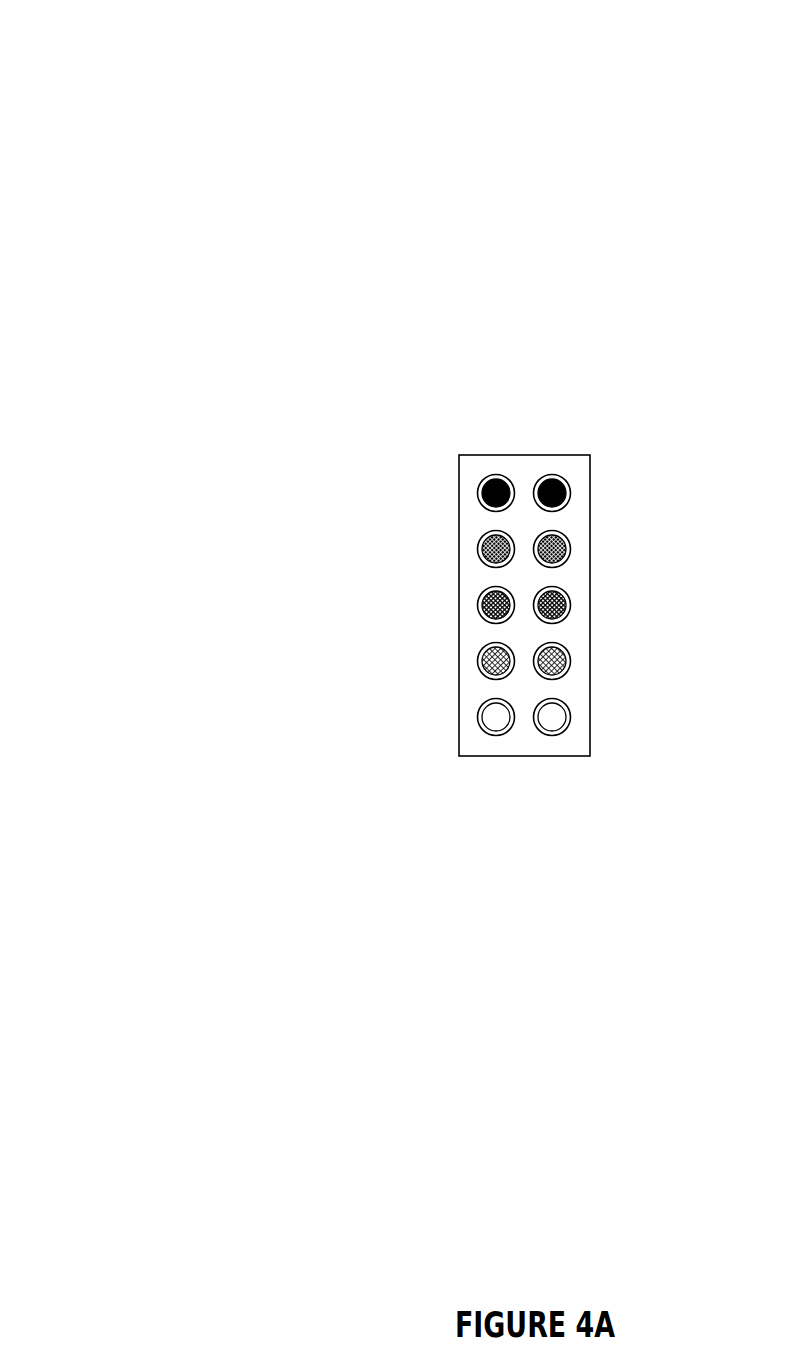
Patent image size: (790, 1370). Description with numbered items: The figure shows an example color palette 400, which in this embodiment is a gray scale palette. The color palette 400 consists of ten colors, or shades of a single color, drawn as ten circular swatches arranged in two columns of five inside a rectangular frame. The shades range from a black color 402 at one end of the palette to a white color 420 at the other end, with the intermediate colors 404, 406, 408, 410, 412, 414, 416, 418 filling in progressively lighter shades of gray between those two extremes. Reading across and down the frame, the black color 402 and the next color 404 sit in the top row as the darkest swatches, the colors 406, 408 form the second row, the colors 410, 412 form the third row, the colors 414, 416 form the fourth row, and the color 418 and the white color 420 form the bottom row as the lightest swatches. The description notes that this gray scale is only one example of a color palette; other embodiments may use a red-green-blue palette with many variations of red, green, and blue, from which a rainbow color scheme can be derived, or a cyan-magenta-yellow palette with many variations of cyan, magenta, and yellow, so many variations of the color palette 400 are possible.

The color palette 400 is at (118, 58).
The black color 402 is at (477, 493).
The color of the palette 404 is at (571, 493).
The color of the palette 406 is at (477, 549).
The color of the palette 408 is at (571, 549).
The color of the palette 410 is at (477, 605).
The color of the palette 412 is at (571, 605).
The color of the palette 414 is at (477, 661).
The color of the palette 416 is at (571, 661).
The color of the palette 418 is at (477, 717).
The white color 420 is at (571, 717).